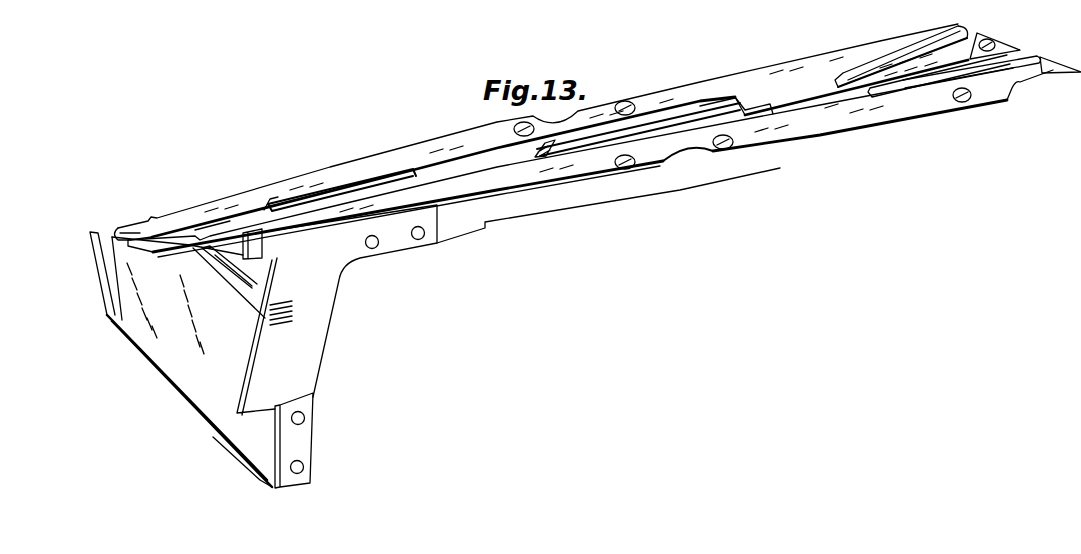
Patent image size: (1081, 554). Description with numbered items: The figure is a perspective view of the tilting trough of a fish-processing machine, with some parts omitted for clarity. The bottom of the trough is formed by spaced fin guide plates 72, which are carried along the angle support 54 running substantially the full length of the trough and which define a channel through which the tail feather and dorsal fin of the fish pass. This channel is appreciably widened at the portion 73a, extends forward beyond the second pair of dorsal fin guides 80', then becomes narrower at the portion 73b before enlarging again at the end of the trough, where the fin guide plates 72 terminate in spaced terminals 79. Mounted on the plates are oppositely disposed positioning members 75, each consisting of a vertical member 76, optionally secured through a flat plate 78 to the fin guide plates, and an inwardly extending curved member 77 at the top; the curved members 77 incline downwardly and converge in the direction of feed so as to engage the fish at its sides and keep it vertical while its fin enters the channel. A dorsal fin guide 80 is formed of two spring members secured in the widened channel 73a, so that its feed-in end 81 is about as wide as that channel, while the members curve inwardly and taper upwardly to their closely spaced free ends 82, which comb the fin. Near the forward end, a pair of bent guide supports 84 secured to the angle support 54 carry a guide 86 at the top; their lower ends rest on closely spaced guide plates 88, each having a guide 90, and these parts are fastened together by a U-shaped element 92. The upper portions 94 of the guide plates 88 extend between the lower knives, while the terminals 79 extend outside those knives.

The angle support 54 is at (530, 206).
The fin guide plates 72 is at (797, 63).
The widened channel 73a is at (748, 118).
The narrower channel 73b is at (198, 220).
The positioning members 75 is at (962, 40).
The vertical member 76 is at (1042, 68).
The curved member 77 is at (857, 80).
The flat plate 78 is at (997, 42).
The terminals 79 is at (138, 239).
The dorsal fin guide 80 is at (638, 115).
The second pair of dorsal fin guides 80' is at (340, 172).
The feed-in end 81 is at (713, 112).
The free ends 82 is at (540, 150).
The guide supports 84 is at (318, 356).
The guide 86 is at (250, 236).
The guide plates 88 is at (172, 365).
The guide 90 is at (238, 278).
The U-shaped element 92 is at (310, 445).
The upper portions 94 is at (102, 268).